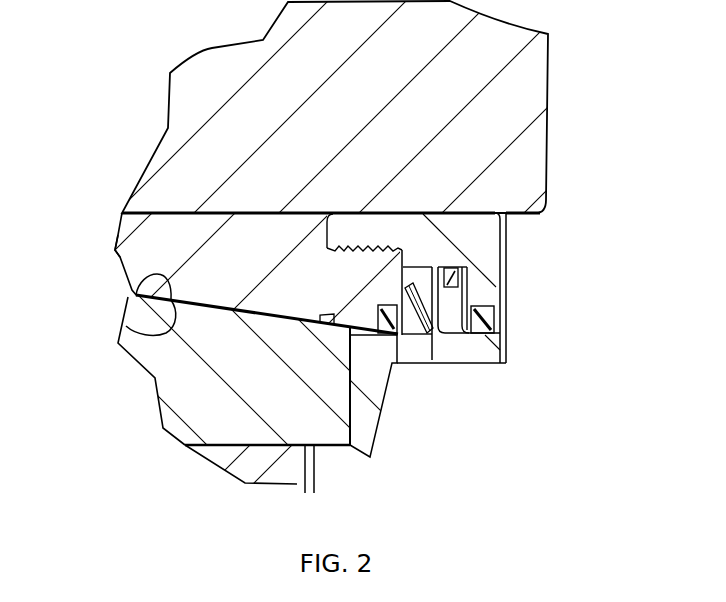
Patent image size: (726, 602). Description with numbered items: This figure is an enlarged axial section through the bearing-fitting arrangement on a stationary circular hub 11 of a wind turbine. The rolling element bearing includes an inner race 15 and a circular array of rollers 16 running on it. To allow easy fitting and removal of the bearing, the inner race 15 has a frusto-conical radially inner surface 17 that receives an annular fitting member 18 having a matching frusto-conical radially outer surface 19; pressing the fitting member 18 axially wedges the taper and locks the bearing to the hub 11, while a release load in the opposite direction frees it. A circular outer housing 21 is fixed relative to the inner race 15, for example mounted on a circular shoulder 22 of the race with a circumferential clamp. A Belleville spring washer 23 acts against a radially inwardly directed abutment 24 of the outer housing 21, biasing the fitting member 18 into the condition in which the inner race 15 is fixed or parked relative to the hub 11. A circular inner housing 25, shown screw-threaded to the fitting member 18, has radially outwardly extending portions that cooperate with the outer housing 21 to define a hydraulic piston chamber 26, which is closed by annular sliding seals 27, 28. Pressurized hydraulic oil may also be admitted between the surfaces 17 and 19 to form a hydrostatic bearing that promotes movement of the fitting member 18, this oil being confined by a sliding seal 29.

The stationary circular hub 11 is at (534, 145).
The circular inner housing 25 is at (492, 233).
The annular sliding seal 27 is at (465, 272).
The radially inwardly directed abutment 24 is at (453, 300).
The annular sliding seal 28 is at (487, 329).
The annular fitting member 18 is at (119, 251).
The frusto-conical radially outer surface 19 is at (123, 293).
The frusto-conical radially inner surface 17 is at (109, 324).
The inner race 15 is at (177, 380).
The rollers 16 is at (212, 453).
The circular shoulder 22 is at (348, 450).
The circular outer housing 21 is at (365, 423).
The sliding seal 29 is at (388, 336).
The Belleville spring washer 23 is at (433, 335).
The hydraulic piston chamber 26 is at (467, 337).